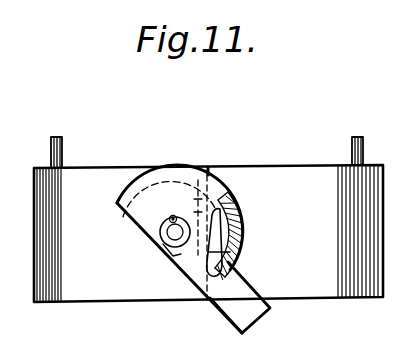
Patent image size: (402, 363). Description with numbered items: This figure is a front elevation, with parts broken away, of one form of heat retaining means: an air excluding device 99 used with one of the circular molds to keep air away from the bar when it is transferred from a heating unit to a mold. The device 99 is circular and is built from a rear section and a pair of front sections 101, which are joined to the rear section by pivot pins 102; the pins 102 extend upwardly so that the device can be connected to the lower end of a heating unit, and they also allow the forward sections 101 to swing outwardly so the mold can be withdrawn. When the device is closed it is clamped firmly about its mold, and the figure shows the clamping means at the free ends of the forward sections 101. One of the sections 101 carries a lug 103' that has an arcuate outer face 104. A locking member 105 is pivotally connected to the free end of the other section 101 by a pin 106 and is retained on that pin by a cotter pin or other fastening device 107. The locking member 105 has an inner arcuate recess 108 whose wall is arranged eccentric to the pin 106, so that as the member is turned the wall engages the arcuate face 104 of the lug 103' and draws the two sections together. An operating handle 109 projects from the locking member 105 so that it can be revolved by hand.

The air excluding device 99 is at (104, 163).
The front sections 101 is at (126, 173).
The pivot pins 102 is at (50, 147).
The lug 103' is at (249, 236).
The arcuate outer face 104 is at (232, 202).
The locking member 105 is at (145, 222).
The pin 106 is at (168, 240).
The cotter pin 107 is at (173, 215).
The inner arcuate recess 108 is at (232, 260).
The operating handle 109 is at (235, 313).